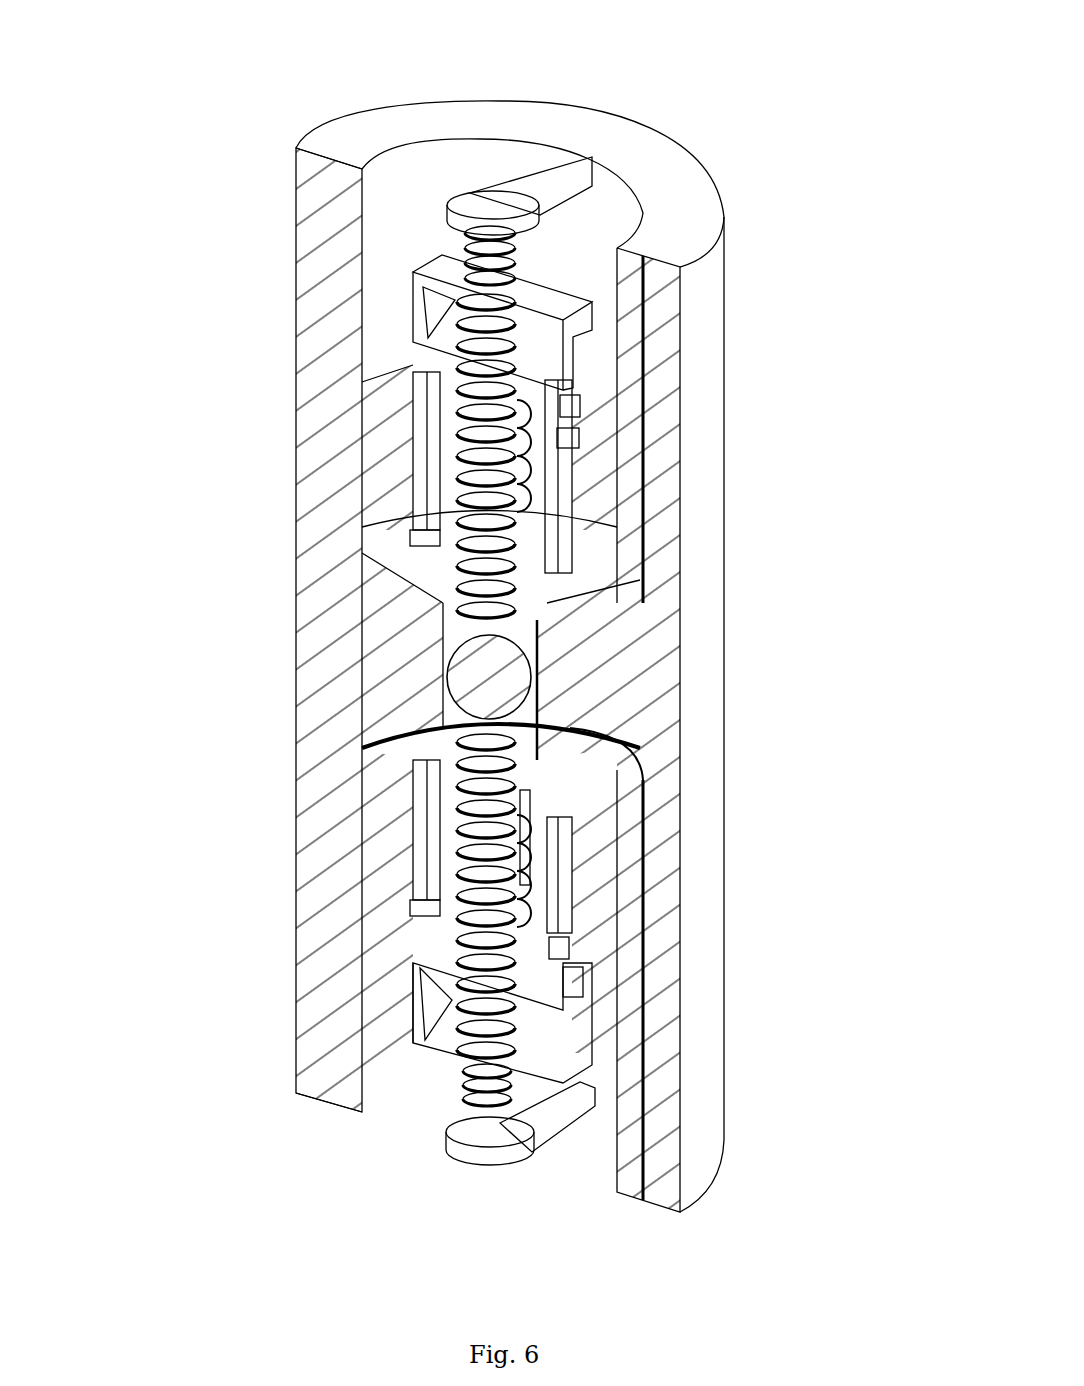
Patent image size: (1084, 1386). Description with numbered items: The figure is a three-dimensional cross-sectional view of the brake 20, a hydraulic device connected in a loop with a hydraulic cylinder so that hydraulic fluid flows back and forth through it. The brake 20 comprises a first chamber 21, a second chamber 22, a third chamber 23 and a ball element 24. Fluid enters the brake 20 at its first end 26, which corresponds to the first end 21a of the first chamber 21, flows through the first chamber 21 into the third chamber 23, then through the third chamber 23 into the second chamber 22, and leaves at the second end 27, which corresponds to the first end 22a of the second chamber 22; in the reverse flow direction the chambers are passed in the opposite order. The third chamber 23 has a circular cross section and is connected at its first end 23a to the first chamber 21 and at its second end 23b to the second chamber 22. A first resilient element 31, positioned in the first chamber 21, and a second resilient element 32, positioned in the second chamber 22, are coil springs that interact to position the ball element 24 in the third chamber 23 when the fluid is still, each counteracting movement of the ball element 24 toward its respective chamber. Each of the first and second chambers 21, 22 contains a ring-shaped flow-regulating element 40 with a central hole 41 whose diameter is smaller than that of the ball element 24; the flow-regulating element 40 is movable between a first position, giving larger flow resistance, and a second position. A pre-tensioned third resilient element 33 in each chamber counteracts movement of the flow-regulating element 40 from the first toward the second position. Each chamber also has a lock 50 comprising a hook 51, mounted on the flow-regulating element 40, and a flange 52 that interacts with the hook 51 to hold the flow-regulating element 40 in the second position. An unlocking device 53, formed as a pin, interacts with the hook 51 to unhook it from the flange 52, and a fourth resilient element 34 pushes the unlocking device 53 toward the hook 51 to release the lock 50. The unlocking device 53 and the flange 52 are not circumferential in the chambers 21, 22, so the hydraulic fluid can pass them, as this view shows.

The brake 20 is at (248, 135).
The first chamber 21 is at (403, 245).
The first end of the first chamber 21a is at (433, 117).
The first end of the brake 26 is at (420, 170).
The second chamber 22 is at (385, 830).
The first end of the second chamber 22a is at (520, 1186).
The second end of the brake 27 is at (567, 1172).
The third chamber 23 is at (290, 676).
The first end of the third chamber 23a is at (440, 603).
The second end of the third chamber 23b is at (445, 725).
The ball element 24 is at (492, 678).
The first resilient element 31 is at (460, 565).
The second resilient element 32 is at (527, 743).
The third resilient element 33 is at (553, 480).
The fourth resilient element 34 is at (527, 255).
The flow-regulating element 40 is at (584, 582).
The central hole 41 is at (525, 800).
The lock 50 is at (726, 437).
The hook 51 is at (582, 440).
The flange 52 is at (573, 413).
The unlocking device 53 is at (553, 347).